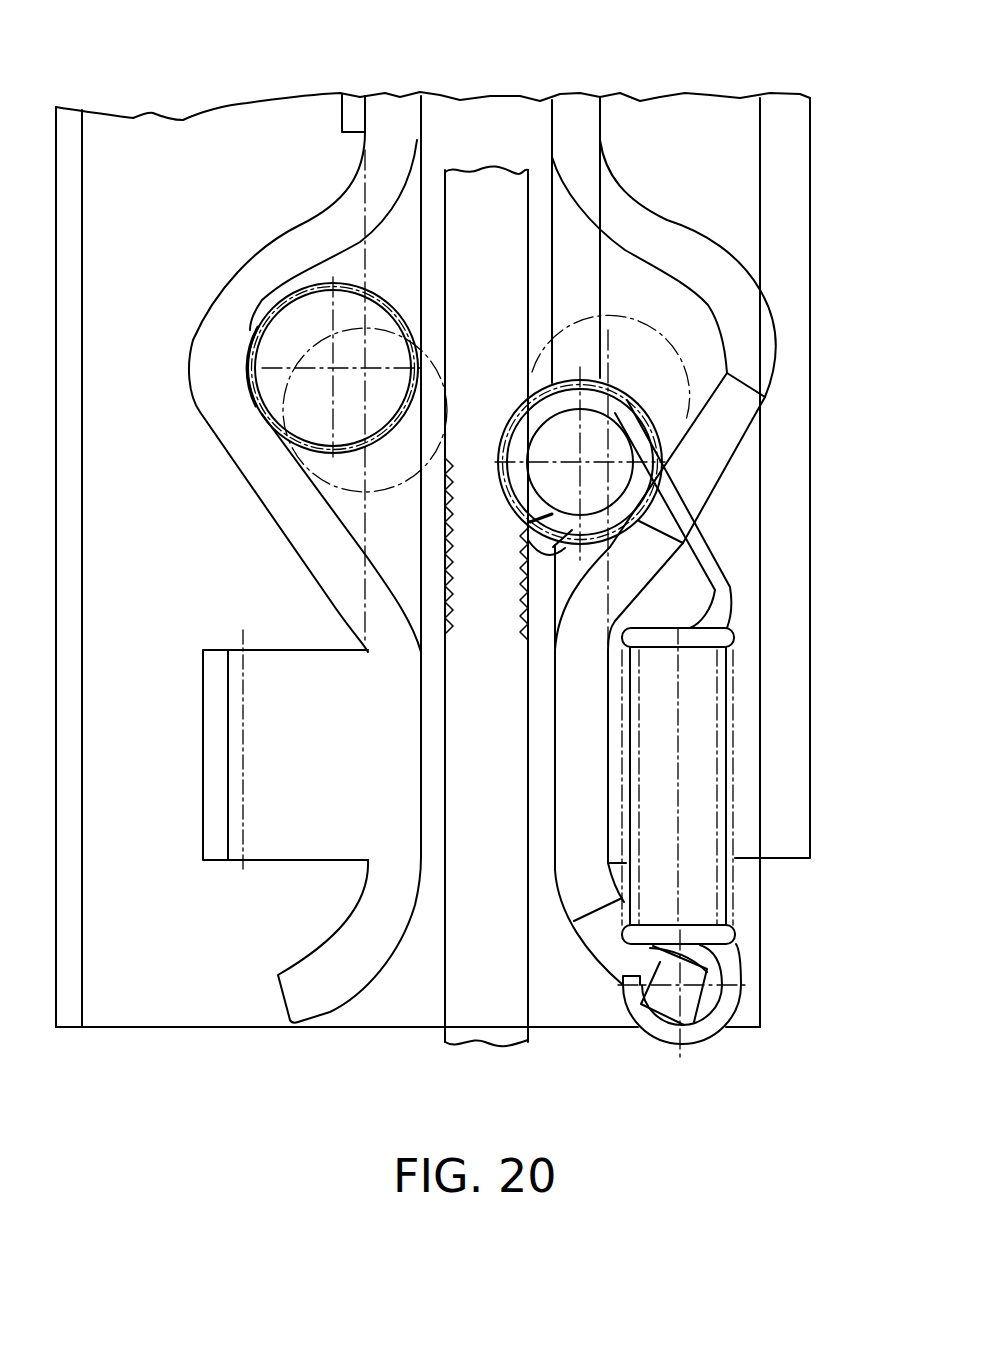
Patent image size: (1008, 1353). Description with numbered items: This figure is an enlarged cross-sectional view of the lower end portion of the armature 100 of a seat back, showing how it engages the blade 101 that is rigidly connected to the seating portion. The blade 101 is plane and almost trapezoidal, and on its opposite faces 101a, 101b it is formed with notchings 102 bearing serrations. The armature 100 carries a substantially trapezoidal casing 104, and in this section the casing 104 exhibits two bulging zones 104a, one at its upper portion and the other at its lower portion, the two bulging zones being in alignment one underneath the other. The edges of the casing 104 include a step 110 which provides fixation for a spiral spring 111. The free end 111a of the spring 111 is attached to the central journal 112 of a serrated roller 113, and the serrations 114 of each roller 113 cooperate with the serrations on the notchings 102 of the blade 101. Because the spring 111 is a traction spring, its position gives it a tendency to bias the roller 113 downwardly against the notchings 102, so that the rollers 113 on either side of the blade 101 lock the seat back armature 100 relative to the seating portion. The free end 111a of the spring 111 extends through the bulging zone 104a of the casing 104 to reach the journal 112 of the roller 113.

The armature 100 is at (681, 120).
The blade 101 is at (498, 242).
The face 101a is at (533, 316).
The face 101b is at (445, 313).
The notchings 102 is at (522, 605).
The casing 104 is at (780, 695).
The bulging zone 104a is at (213, 345).
The step 110 is at (733, 1007).
The spiral spring 111 is at (700, 797).
The free end of spring 111a is at (735, 557).
The central journal 112 is at (558, 437).
The serrated roller 113 is at (305, 318).
The serrations 114 is at (258, 328).